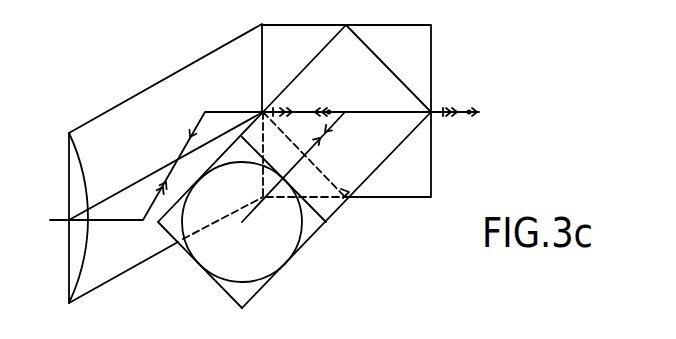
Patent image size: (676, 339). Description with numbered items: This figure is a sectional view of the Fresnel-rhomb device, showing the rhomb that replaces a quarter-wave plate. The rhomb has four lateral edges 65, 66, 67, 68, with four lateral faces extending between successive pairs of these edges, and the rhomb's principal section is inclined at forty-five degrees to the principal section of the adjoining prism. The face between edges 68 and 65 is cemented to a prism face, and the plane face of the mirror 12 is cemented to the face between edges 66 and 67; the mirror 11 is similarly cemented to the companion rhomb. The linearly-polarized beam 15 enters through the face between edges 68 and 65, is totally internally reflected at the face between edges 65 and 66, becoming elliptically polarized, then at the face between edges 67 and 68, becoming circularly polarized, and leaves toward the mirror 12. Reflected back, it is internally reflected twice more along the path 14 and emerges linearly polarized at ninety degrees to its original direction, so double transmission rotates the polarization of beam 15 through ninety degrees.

The mirror 11 is at (61, 284).
The mirror 12 is at (303, 243).
The light beam path 14 is at (231, 112).
The beam 15 is at (340, 118).
The lateral edge 65 is at (383, 63).
The lateral edge 66 is at (310, 238).
The lateral edge 67 is at (233, 298).
The lateral edge 68 is at (349, 193).